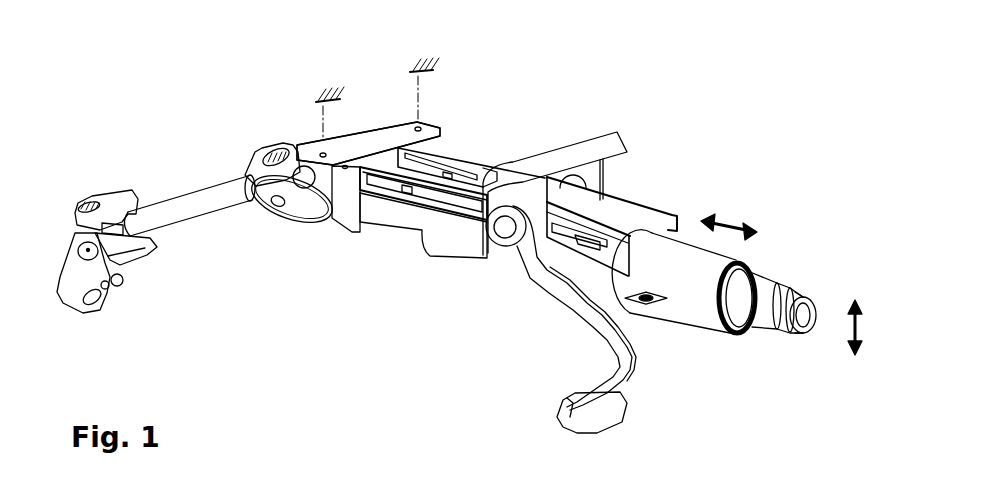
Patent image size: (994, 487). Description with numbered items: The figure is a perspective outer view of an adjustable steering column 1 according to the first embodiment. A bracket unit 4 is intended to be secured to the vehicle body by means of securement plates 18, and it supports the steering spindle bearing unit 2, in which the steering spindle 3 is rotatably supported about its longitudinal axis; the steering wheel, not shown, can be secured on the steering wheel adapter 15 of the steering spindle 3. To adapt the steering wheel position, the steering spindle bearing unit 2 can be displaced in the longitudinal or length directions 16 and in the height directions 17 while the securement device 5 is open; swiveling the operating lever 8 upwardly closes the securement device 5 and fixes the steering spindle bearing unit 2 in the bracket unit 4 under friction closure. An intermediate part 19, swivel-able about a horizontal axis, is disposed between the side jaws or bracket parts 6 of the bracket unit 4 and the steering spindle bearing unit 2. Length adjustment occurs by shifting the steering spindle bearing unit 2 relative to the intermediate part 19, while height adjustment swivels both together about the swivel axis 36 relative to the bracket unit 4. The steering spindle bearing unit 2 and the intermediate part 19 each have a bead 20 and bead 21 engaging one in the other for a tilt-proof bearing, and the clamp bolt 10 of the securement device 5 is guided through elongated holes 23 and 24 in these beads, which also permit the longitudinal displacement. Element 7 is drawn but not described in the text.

The steering column 1 is at (617, 190).
The steering spindle bearing unit 2 is at (663, 247).
The steering spindle 3 is at (193, 200).
The bracket unit 4 is at (442, 136).
The securement device 5 is at (487, 258).
The side jaws or bracket parts 6 is at (578, 180).
The console part 7 is at (433, 247).
The operating lever 8 is at (630, 365).
The clamp bolt 10 is at (508, 238).
The steering wheel adapter 15 is at (782, 323).
The longitudinal or length directions 16 is at (740, 222).
The height directions 17 is at (860, 324).
The securement plates 18 is at (366, 135).
The intermediate part 19 is at (395, 206).
The bead 20 is at (634, 265).
The bead 21 is at (425, 207).
The elongated hole 23 is at (590, 238).
The elongated hole 24 is at (358, 195).
The swivel axis 36 is at (224, 206).